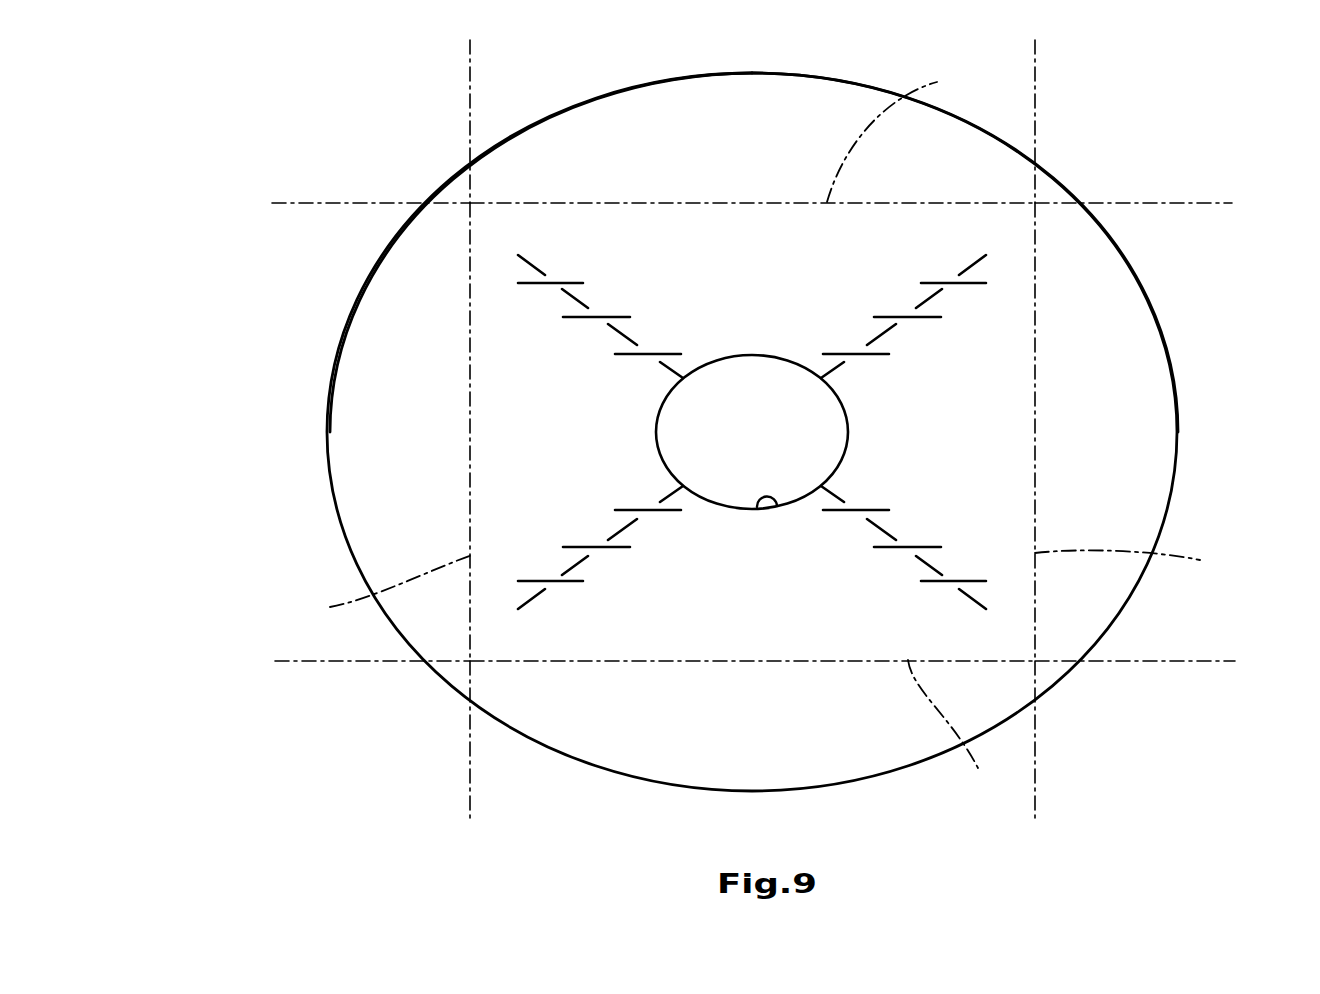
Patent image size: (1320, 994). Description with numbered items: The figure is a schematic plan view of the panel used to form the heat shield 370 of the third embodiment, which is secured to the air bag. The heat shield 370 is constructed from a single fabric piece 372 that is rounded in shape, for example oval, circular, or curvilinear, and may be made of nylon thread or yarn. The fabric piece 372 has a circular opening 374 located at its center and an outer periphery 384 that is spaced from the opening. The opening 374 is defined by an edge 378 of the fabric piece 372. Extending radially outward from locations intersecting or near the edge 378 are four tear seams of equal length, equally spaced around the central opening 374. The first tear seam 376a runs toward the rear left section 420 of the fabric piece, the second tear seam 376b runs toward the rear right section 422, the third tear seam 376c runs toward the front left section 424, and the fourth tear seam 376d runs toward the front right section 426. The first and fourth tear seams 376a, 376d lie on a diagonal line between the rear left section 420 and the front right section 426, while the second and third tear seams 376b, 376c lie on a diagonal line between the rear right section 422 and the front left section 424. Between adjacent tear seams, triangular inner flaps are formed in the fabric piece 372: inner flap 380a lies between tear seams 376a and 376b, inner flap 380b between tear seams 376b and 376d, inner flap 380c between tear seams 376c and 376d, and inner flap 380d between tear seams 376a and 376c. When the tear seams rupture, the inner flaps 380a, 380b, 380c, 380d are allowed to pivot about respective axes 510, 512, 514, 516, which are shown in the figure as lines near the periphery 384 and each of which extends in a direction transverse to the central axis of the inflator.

The heat shield 370 is at (258, 333).
The fabric piece 372 is at (298, 262).
The circular opening 374 is at (743, 393).
The first tear seam 376a is at (597, 318).
The second tear seam 376b is at (918, 318).
The third tear seam 376c is at (605, 548).
The fourth tear seam 376d is at (913, 546).
The edge 378 is at (757, 507).
The inner flap 380a is at (772, 322).
The inner flap 380b is at (870, 443).
The inner flap 380c is at (795, 528).
The inner flap 380d is at (643, 424).
The periphery 384 is at (1133, 268).
The rear left section 420 is at (421, 153).
The rear right section 422 is at (1099, 156).
The front left section 424 is at (434, 713).
The front right section 426 is at (1100, 694).
The axis 510 is at (937, 82).
The axis 512 is at (1200, 560).
The axis 514 is at (955, 731).
The axis 516 is at (330, 607).